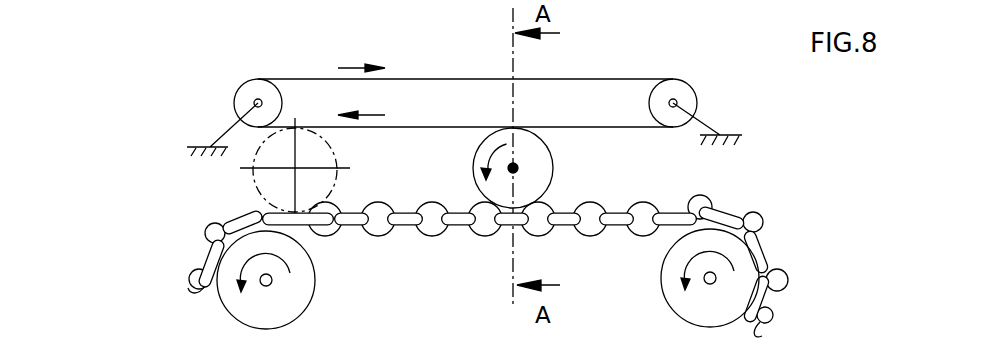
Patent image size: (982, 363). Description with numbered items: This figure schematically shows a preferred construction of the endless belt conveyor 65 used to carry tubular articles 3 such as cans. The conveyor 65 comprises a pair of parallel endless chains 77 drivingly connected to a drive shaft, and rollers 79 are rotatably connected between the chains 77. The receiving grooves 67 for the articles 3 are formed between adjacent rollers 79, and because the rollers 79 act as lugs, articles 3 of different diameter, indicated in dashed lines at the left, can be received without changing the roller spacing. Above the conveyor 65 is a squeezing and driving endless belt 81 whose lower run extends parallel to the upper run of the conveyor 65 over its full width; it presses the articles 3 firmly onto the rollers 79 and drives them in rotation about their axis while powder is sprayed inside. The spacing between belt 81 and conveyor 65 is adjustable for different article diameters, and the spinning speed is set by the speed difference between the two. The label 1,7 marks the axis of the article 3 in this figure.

The squeezing and driving endless belt 81 is at (637, 77).
The article 3 is at (520, 168).
The roller axis 1 is at (522, 166).
The roller axis 7 is at (542, 160).
The receiving groove 67 is at (488, 247).
The endless chain 77 is at (408, 222).
The roller 79 is at (478, 235).
The endless belt conveyor 65 is at (740, 200).